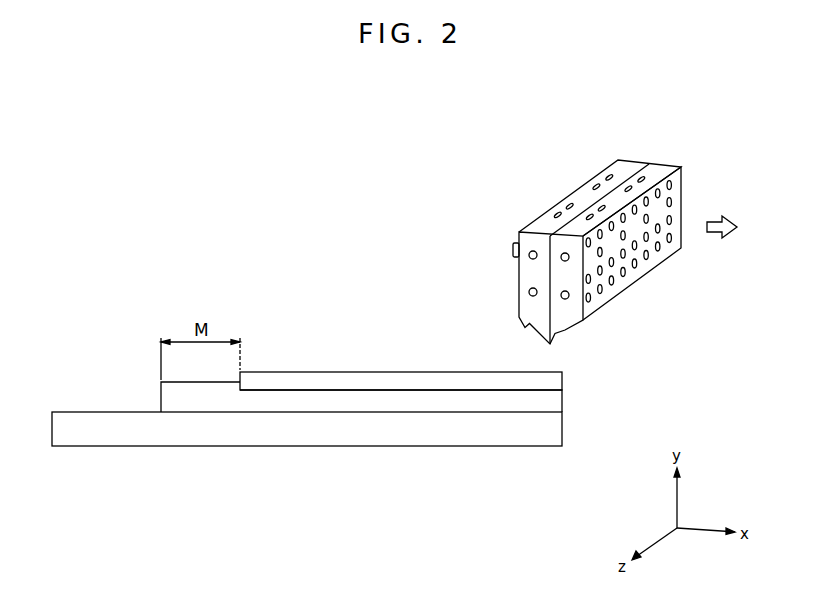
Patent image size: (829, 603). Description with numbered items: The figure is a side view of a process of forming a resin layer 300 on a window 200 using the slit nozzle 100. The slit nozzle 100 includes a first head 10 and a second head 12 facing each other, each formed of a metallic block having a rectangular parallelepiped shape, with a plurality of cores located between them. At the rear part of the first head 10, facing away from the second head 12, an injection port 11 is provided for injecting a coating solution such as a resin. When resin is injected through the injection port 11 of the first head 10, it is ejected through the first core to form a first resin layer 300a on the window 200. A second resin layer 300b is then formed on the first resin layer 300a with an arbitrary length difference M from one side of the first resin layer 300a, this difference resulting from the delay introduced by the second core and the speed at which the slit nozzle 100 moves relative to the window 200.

The slit nozzle 100 is at (595, 213).
The first head 10 is at (542, 222).
The injection port 11 is at (513, 245).
The second head 12 is at (666, 166).
The window 200 is at (562, 430).
The resin layer 300 is at (427, 393).
The first resin layer 300a is at (562, 402).
The second resin layer 300b is at (562, 382).